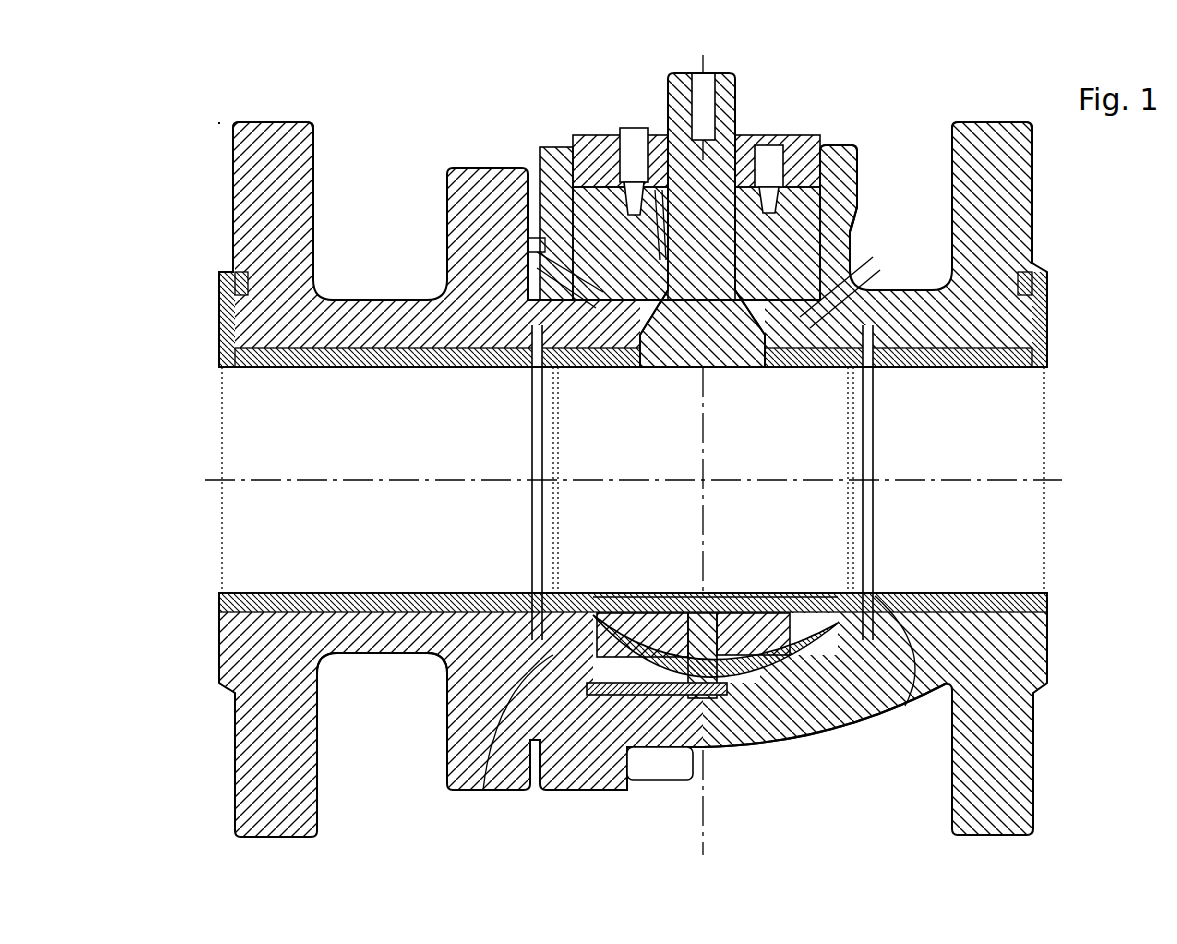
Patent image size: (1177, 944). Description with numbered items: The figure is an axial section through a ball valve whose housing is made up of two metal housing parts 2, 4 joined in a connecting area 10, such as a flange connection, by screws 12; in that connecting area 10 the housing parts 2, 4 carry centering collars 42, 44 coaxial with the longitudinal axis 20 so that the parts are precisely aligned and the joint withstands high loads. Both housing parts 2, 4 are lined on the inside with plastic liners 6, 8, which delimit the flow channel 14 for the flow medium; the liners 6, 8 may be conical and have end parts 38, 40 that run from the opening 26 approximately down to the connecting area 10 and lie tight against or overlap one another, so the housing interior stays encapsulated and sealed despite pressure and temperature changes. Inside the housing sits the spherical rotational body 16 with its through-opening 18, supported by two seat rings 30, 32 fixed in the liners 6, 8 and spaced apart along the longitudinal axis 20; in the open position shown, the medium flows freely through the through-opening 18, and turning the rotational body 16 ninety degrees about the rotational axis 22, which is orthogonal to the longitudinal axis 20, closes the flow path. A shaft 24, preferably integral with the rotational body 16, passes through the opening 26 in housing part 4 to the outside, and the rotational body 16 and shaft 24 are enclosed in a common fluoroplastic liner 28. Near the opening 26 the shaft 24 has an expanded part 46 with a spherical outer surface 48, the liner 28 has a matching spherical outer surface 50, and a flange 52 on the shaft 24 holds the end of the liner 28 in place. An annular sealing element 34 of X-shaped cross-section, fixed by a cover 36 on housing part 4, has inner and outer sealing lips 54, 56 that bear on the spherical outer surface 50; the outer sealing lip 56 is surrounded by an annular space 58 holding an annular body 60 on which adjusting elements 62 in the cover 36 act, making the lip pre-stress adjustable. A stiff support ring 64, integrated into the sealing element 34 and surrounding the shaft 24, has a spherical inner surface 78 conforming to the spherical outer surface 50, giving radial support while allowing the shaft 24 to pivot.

The housing part 2 is at (250, 223).
The housing part 4 is at (1012, 246).
The plastic liner 6 is at (228, 375).
The plastic liner 8 is at (1000, 370).
The connecting area 10 is at (535, 795).
The screws 12 is at (440, 718).
The flow channel 14 is at (312, 448).
The spherical rotational body 16 is at (762, 645).
The through-opening 18 is at (783, 563).
The longitudinal axis 20 is at (1060, 484).
The rotational axis 22 is at (705, 776).
The shaft 24 is at (722, 82).
The opening 26 is at (777, 282).
The liner 28 is at (775, 330).
The seat ring 30 is at (412, 653).
The seat ring 32 is at (923, 667).
The annular sealing element 34 is at (866, 173).
The cover 36 is at (835, 145).
The end part 38 is at (496, 735).
The end part 40 is at (596, 766).
The centering collar 42 is at (535, 246).
The centering collar 44 is at (535, 222).
The expanded part 46 is at (764, 160).
The spherical outer surface 48 is at (780, 137).
The spherical outer surface 50 is at (853, 206).
The flange 52 is at (664, 160).
The inner sealing lip 54 is at (776, 368).
The outer sealing lip 56 is at (738, 368).
The annular space 58 is at (552, 147).
The annular body 60 is at (590, 135).
The adjusting elements 62 is at (638, 155).
The support ring 64 is at (626, 368).
The spherical inner surface 78 is at (678, 73).